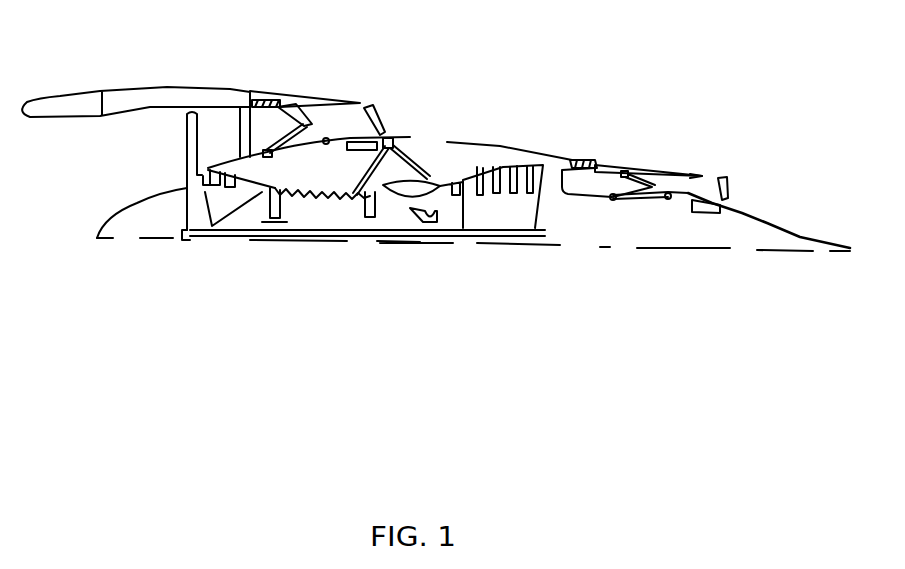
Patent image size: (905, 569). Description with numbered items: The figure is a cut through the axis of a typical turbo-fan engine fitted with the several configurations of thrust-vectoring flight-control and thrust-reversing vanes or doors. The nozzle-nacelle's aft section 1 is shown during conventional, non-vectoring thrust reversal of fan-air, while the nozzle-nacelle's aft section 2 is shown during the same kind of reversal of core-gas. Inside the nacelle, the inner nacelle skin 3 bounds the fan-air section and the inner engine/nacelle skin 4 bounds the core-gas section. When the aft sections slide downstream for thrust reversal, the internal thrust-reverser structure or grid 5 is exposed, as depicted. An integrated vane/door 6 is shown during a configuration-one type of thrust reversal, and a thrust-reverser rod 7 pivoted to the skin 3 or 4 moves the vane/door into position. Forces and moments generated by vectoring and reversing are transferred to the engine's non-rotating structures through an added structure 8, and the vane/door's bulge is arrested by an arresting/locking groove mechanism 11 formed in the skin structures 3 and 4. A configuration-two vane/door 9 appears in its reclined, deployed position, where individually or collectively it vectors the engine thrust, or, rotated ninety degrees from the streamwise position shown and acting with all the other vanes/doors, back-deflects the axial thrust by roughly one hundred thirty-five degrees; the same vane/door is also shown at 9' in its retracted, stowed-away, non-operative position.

The nozzle-nacelle aft section (fan-air) 1 is at (355, 103).
The nozzle-nacelle aft section (core-gas) 2 is at (707, 174).
The inner nacelle skin 3 is at (392, 142).
The inner engine/nacelle skin 4 is at (500, 144).
The internal TR structure/grid 5 is at (262, 99).
The integrated TVFC/TR vane/door 6 is at (308, 96).
The TR rod 7 is at (268, 157).
The added structure 8 is at (399, 151).
The configuration-2 TVFC/TR vane/door (deployed) 9 is at (564, 132).
The configuration-2 TVFC/TR vane/door (stowed) 9' is at (547, 222).
The arresting/locking groove mechanism 11 is at (325, 143).